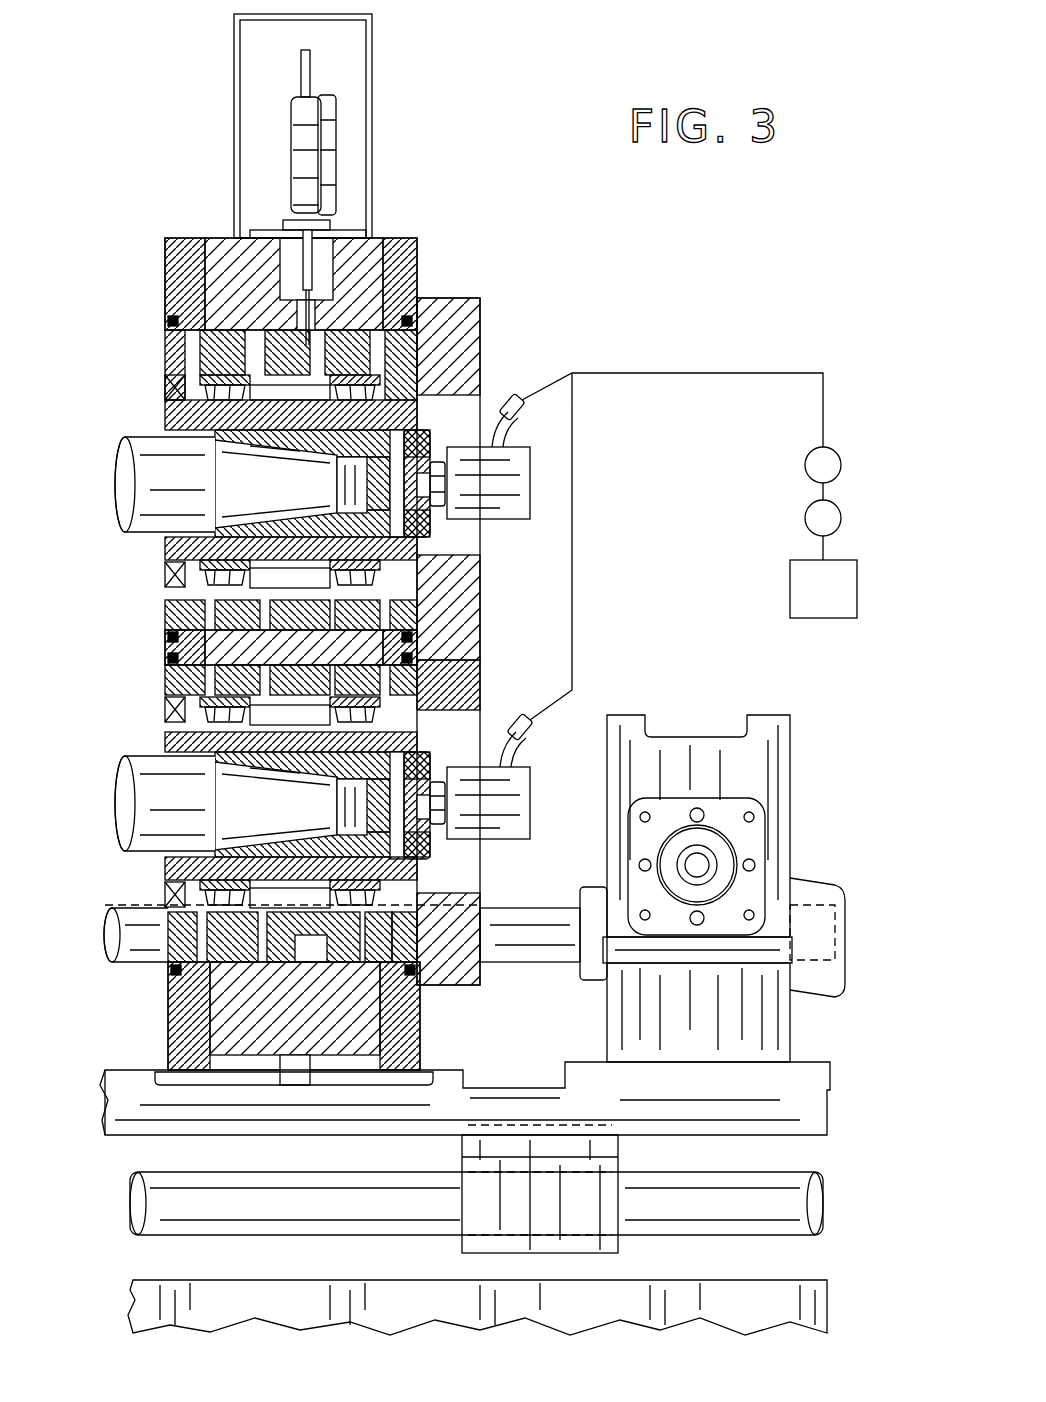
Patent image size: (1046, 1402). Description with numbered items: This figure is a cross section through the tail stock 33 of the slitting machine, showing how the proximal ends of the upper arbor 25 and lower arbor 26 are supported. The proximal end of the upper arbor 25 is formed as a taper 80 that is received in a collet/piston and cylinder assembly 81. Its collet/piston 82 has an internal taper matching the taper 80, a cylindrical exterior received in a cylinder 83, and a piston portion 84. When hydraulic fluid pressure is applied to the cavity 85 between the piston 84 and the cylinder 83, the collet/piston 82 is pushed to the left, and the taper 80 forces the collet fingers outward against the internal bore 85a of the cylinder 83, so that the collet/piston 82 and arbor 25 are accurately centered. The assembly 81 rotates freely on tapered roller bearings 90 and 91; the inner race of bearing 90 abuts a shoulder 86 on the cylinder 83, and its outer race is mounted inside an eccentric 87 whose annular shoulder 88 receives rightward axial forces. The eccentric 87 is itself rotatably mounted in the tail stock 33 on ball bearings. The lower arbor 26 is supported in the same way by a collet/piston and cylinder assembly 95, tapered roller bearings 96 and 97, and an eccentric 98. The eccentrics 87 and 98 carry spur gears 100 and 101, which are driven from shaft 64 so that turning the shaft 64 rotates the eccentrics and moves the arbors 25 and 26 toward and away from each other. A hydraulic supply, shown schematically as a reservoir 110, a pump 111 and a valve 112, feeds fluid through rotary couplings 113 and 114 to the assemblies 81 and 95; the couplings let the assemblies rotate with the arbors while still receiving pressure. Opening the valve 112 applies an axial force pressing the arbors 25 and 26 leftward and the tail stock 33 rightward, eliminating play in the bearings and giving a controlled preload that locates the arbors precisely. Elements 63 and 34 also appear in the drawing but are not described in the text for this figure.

The tail stock 33 is at (214, 232).
The spur gear 100 is at (480, 302).
The eccentric 87 is at (160, 333).
The annular shoulder 88 is at (232, 346).
The tapered roller bearing 90 is at (193, 388).
The collet/piston and cylinder assembly 81 is at (153, 418).
The tapered roller bearing 91 is at (354, 379).
The piston portion 84 is at (410, 448).
The upper arbor 25 is at (122, 455).
The collet/piston 82 is at (300, 540).
The taper 80 is at (290, 485).
The internal bore 85a is at (185, 532).
The cavity 85 is at (432, 522).
The rotary coupling 113 is at (530, 487).
The cylinder 83 is at (165, 549).
The shoulder 86 is at (205, 578).
The eccentric 98 is at (153, 679).
The tapered roller bearing 96 is at (191, 700).
The tapered roller bearing 97 is at (478, 690).
The collet/piston and cylinder assembly 95 is at (440, 750).
The lower arbor 26 is at (122, 803).
The rotary coupling 114 is at (533, 798).
The gear box 63 is at (790, 818).
The spur gear 101 is at (480, 892).
The shaft 64 is at (500, 968).
The valve 112 is at (805, 465).
The pump 111 is at (805, 518).
The reservoir 110 is at (790, 592).
The guide rail 34 is at (825, 1218).